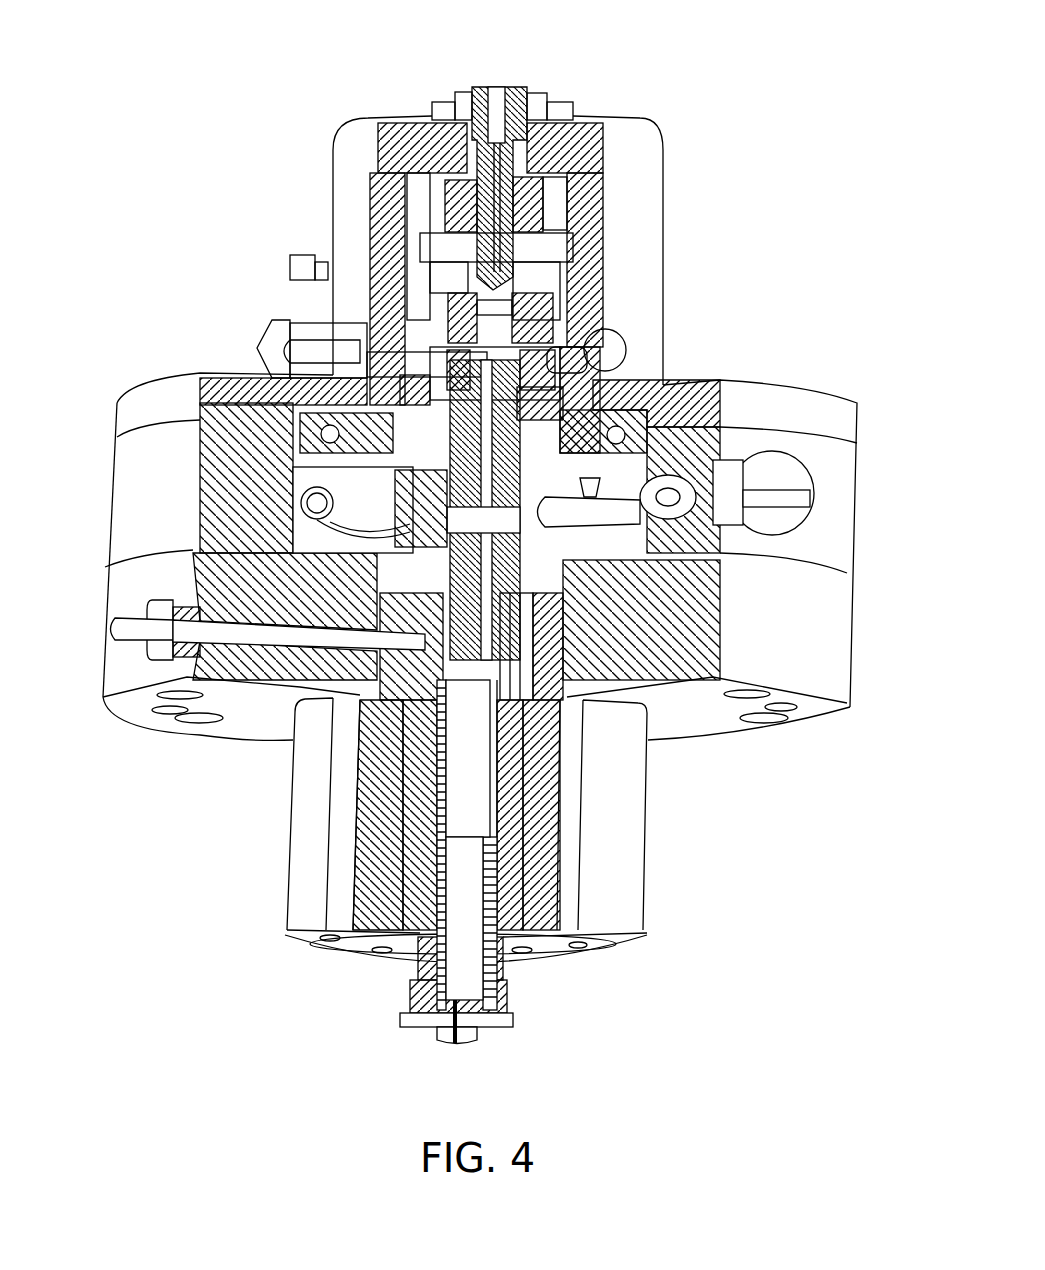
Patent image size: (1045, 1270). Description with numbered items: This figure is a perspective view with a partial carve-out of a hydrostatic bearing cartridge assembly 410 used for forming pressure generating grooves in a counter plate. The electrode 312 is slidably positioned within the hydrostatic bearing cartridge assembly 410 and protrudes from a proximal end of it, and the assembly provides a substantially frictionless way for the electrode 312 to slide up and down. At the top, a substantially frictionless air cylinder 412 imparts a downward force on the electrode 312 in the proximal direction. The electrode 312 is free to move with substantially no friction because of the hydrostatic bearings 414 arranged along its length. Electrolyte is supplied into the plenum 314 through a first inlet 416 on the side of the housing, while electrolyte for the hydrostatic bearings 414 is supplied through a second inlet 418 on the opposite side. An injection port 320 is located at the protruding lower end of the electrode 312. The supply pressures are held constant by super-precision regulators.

The hydrostatic bearing cartridge assembly 410 is at (484, 550).
The air cylinder 412 is at (530, 88).
The hydrostatic bearings 414 is at (597, 700).
The first inlet 416 is at (770, 466).
The second inlet 418 is at (135, 623).
The plenum 314 is at (455, 779).
The electrode 312 is at (412, 981).
The injection port 320 is at (492, 1030).